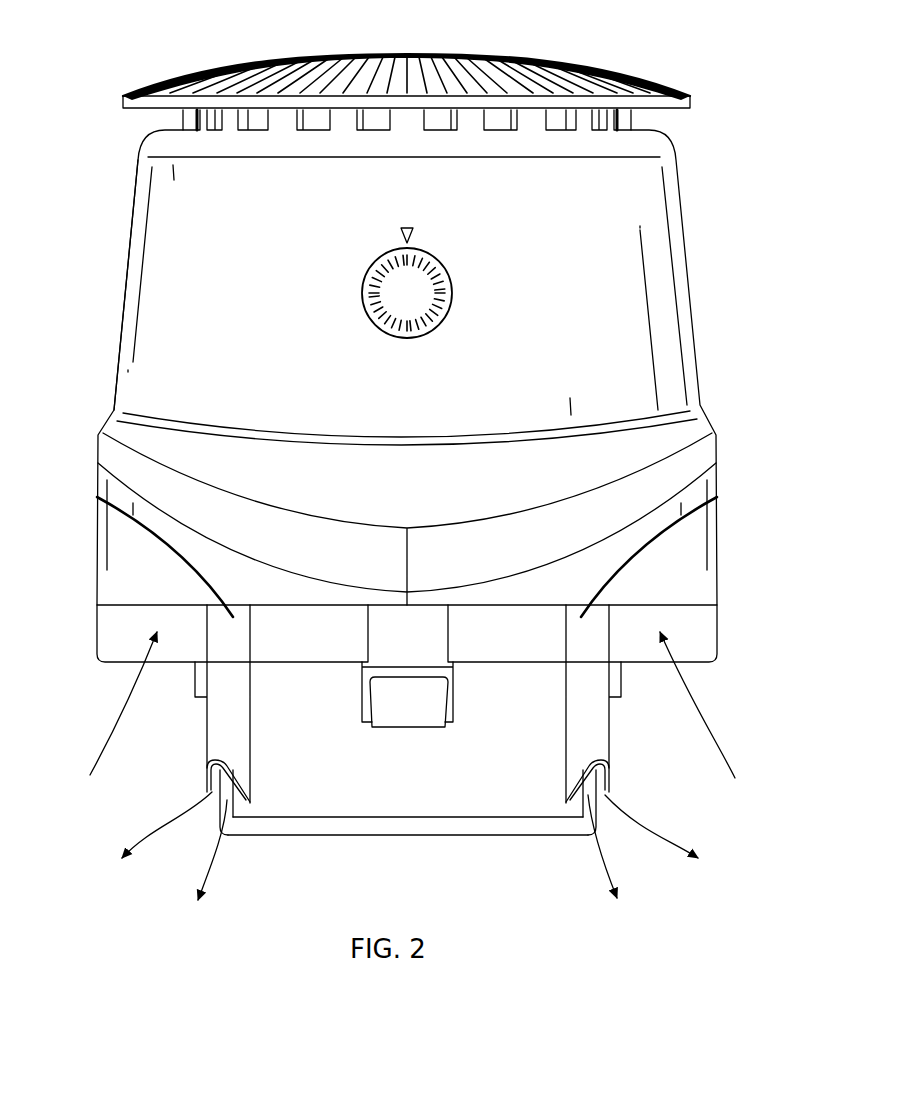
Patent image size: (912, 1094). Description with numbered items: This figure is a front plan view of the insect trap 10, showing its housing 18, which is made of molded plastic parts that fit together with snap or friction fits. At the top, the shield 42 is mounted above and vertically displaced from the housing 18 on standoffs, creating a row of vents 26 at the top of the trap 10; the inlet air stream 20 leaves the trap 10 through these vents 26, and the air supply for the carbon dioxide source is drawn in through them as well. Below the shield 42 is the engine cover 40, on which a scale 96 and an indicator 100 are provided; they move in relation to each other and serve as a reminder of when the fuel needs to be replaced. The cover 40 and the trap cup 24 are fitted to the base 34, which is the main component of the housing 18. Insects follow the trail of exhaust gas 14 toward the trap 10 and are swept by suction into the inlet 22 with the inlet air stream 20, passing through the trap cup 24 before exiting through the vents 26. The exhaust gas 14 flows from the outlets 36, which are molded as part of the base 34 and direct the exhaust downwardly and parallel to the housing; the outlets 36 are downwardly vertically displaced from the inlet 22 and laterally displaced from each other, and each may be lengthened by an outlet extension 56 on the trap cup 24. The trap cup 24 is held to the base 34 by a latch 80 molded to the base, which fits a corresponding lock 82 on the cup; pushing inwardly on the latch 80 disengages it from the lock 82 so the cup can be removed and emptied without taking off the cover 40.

The trap 10 is at (78, 193).
The shield 42 is at (577, 66).
The vents 26 is at (313, 120).
The indicator 100 is at (407, 226).
The scale 96 is at (437, 312).
The trap housing 18 is at (630, 303).
The engine cover 40 is at (160, 344).
The outlets 36 is at (98, 497).
The inlet 22 is at (137, 605).
The base 34 is at (690, 628).
The inlet air stream 20 is at (115, 750).
The outlet extension 56 is at (223, 725).
The exhaust gas 14 is at (217, 857).
The trap cup 24 is at (510, 784).
The lock 82 is at (378, 670).
The latch 80 is at (412, 708).